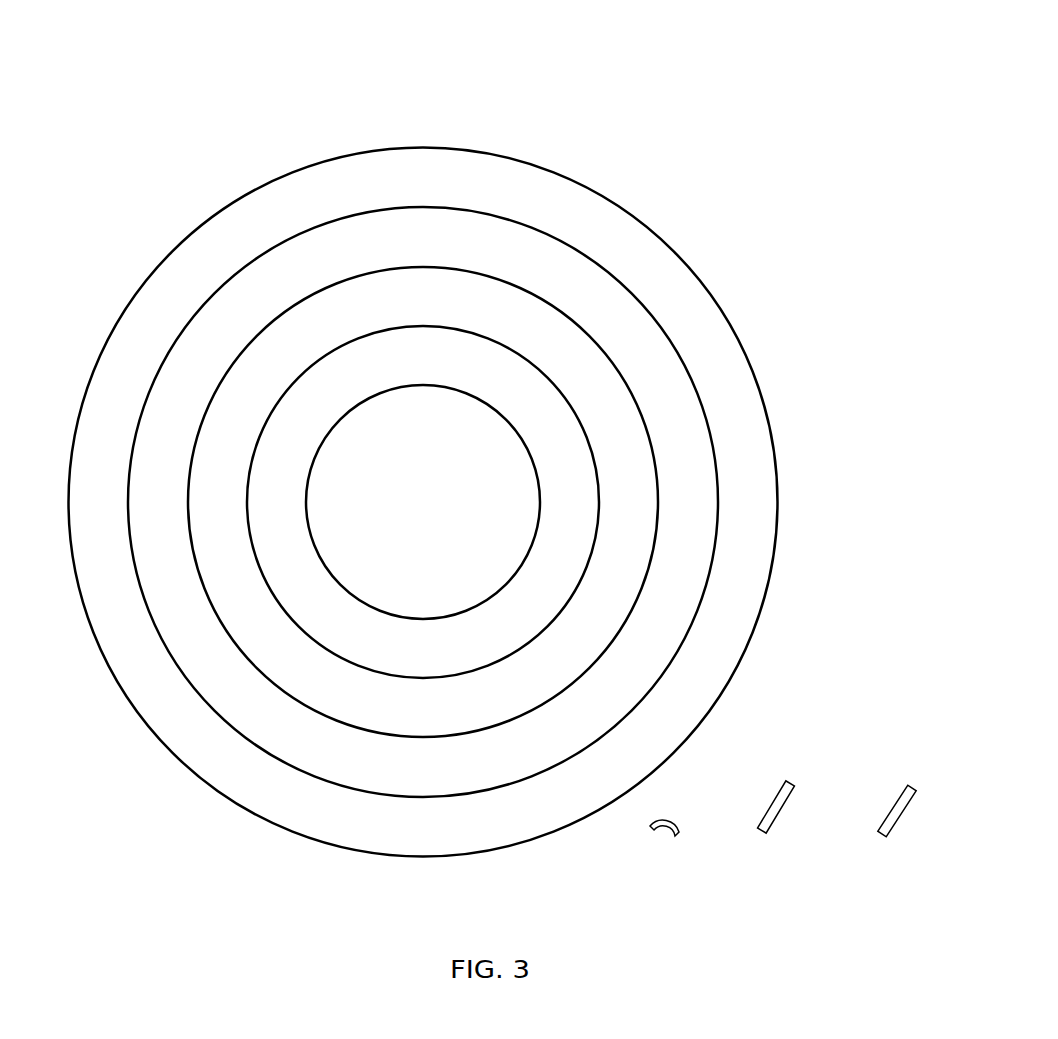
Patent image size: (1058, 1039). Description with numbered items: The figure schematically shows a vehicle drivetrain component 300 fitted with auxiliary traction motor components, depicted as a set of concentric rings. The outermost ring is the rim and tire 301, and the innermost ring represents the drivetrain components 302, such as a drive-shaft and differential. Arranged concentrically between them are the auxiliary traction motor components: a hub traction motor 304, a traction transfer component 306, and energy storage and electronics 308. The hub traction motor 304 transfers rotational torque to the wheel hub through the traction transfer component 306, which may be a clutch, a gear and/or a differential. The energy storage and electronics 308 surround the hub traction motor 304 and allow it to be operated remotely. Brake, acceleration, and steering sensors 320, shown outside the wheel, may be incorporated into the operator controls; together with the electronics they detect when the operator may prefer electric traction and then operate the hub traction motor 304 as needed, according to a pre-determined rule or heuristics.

The vehicle drivetrain component 300 is at (138, 171).
The rim and tire 301 is at (519, 190).
The drivetrain components 302 is at (473, 458).
The hub traction motor 304 is at (598, 399).
The traction transfer component 306 is at (558, 465).
The energy storage and electronics 308 is at (682, 544).
The brake, acceleration, and steering sensors 320 is at (867, 831).